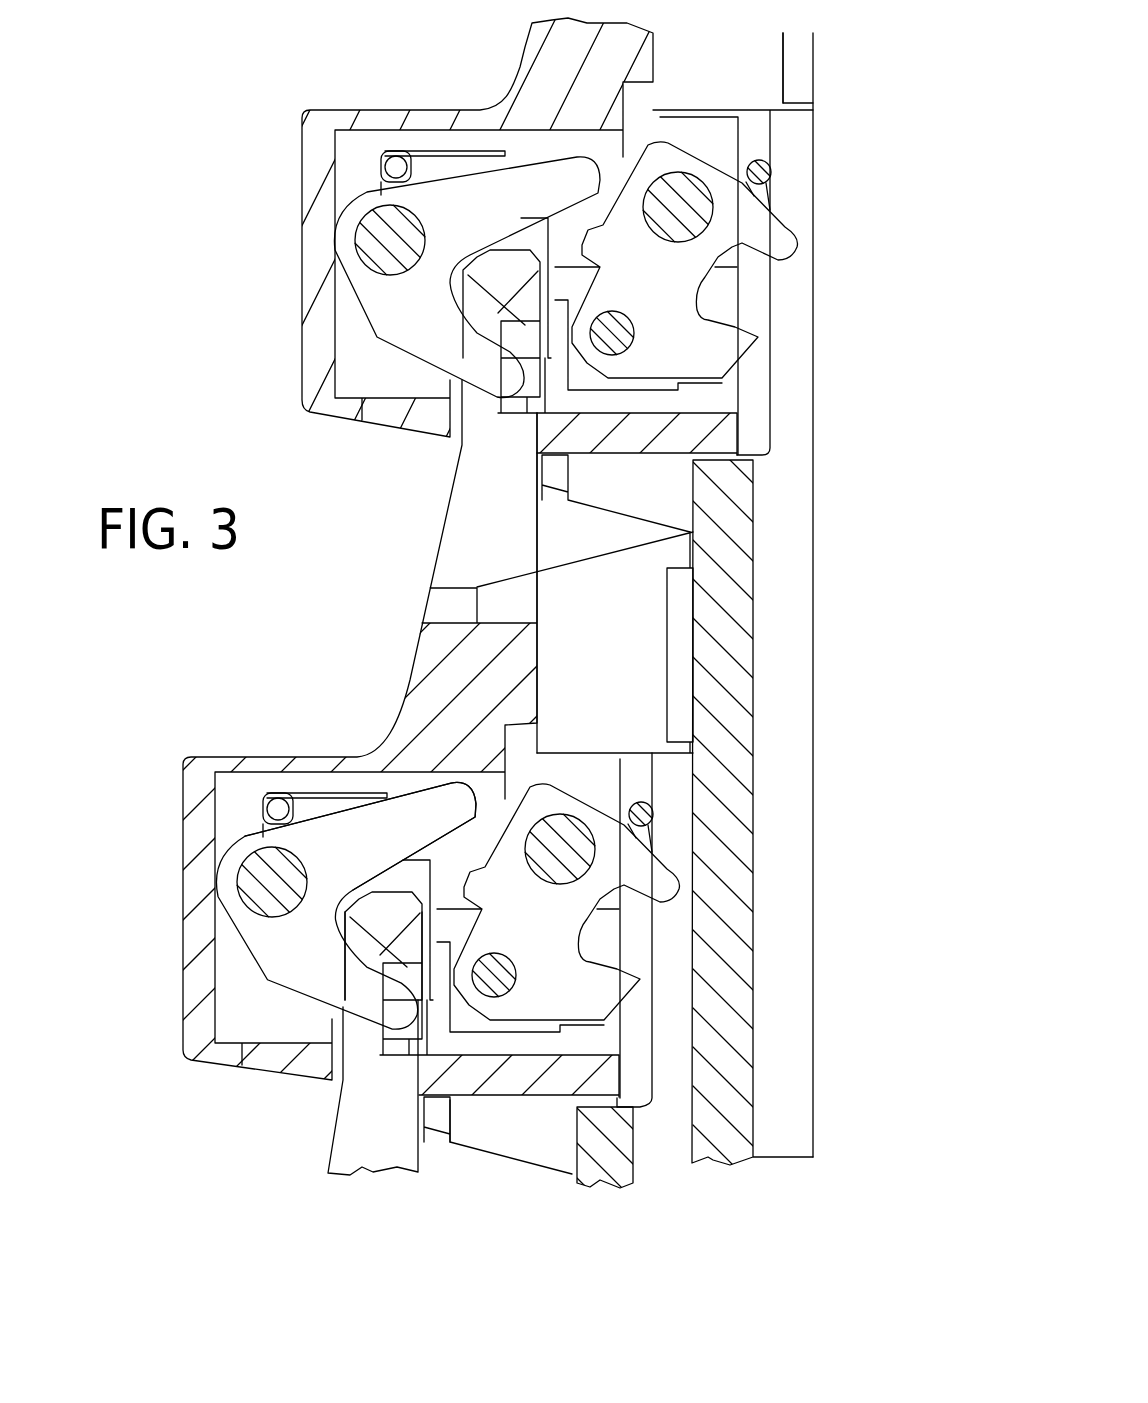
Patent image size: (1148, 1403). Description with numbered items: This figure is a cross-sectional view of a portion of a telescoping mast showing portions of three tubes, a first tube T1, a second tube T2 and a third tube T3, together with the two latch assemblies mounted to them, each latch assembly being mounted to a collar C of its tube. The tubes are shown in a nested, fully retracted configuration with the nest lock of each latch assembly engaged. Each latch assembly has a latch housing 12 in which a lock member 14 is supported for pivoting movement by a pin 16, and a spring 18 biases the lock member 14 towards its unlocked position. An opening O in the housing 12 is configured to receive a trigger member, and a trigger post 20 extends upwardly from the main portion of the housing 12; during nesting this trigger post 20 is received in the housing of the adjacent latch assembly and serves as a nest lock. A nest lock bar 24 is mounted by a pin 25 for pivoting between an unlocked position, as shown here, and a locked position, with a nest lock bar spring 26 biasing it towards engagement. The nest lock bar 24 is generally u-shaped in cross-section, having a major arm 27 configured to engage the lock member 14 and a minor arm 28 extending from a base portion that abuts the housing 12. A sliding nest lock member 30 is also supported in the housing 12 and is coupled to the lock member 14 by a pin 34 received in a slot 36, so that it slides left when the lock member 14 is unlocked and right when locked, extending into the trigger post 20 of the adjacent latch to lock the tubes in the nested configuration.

The latch housing 12 is at (363, 118).
The lock member 14 is at (788, 248).
The pin 16 is at (688, 218).
The spring 18 is at (770, 172).
The trigger post 20 is at (474, 451).
The nest lock bar 24 is at (385, 305).
The pin 25 is at (385, 233).
The nest lock bar spring 26 is at (455, 150).
The major arm 27 is at (403, 823).
The minor arm 28 is at (372, 1017).
The sliding nest lock member 30 is at (527, 400).
The pin 34 is at (618, 333).
The slot 36 is at (593, 368).
The collar C is at (640, 652).
The opening O is at (452, 450).
The first tube T1 is at (793, 132).
The second tube T2 is at (730, 600).
The third tube T3 is at (620, 1163).